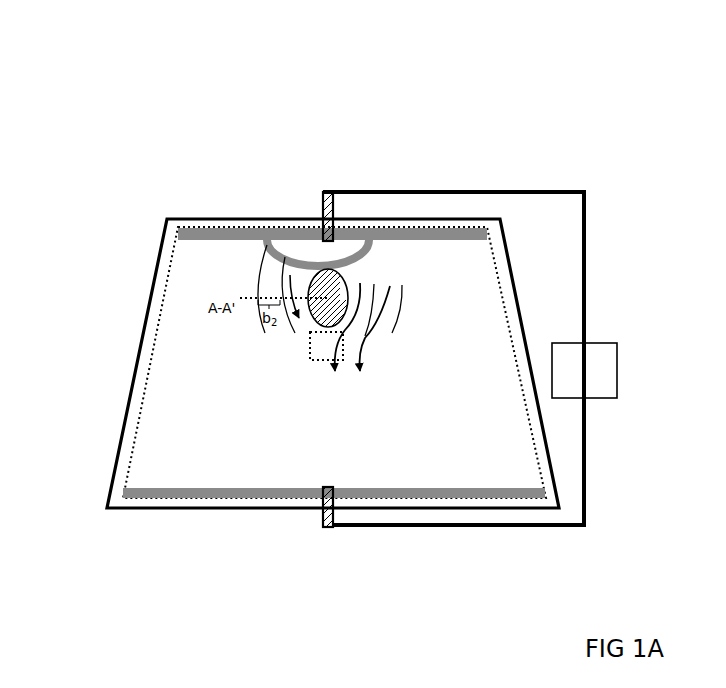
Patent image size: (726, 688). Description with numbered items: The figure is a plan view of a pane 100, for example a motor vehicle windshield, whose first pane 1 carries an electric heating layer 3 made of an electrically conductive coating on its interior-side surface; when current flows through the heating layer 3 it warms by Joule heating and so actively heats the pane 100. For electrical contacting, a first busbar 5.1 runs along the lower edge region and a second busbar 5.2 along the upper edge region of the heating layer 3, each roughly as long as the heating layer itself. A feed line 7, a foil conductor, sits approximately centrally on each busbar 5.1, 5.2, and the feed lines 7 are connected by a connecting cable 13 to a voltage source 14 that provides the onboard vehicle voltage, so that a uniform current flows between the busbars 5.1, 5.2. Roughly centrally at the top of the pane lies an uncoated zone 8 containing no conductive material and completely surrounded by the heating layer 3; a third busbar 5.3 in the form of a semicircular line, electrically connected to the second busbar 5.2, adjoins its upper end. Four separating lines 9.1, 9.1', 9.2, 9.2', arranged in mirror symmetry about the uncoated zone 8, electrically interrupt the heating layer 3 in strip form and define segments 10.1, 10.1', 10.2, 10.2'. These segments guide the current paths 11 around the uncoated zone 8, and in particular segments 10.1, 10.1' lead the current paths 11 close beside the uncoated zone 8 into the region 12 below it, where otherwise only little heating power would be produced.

The pane 100 is at (138, 113).
The first pane 1 is at (177, 343).
The electric heating layer 3 is at (205, 435).
The first busbar 5.1 is at (188, 488).
The second busbar 5.2 is at (487, 228).
The third busbar 5.3 is at (347, 267).
The feed line 7 is at (330, 191).
The uncoated zone 8 is at (330, 298).
The separating line 9.1 is at (236, 198).
The separating line 9.2 is at (171, 270).
The separating line 9.1' is at (413, 203).
The separating line 9.2' is at (523, 294).
The segment 10.1 is at (274, 213).
The segment 10.2 is at (206, 242).
The segment 10.1' is at (417, 174).
The segment 10.2' is at (467, 194).
The current path 11 is at (298, 283).
The region 12 is at (310, 345).
The connecting cable 13 is at (567, 191).
The voltage source 14 is at (617, 348).